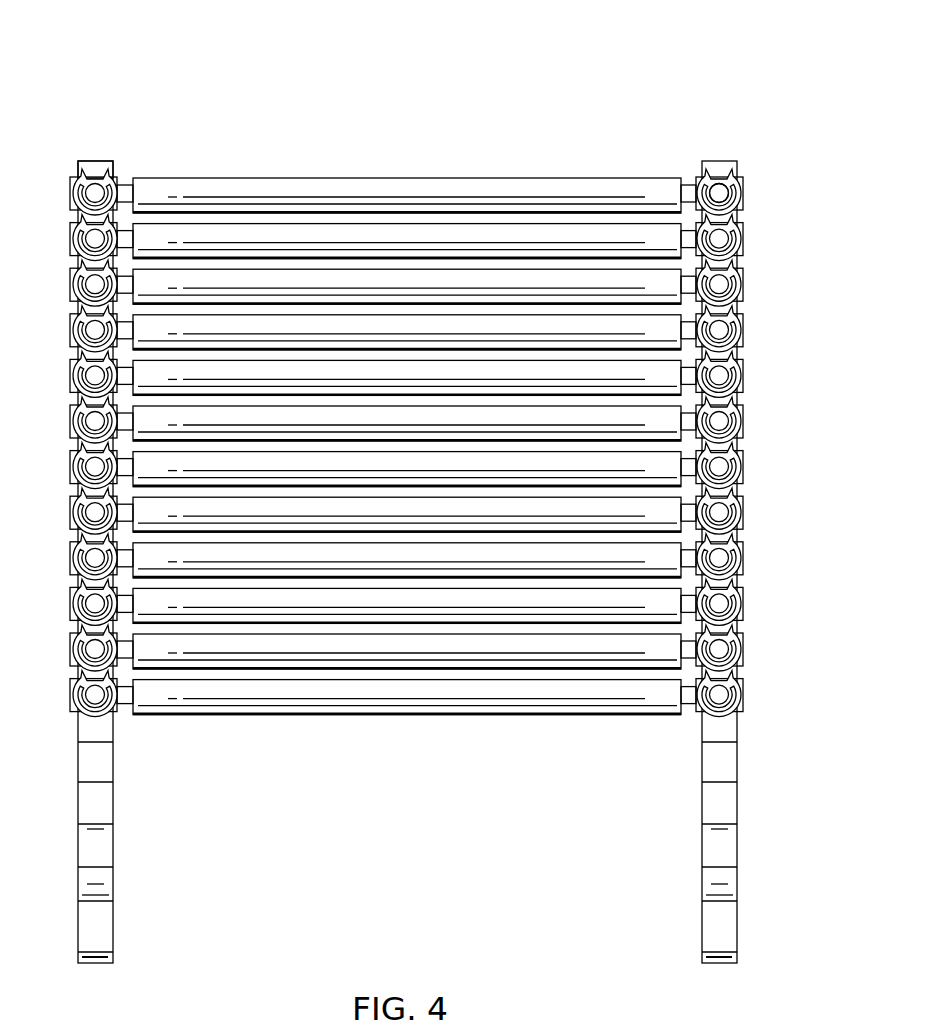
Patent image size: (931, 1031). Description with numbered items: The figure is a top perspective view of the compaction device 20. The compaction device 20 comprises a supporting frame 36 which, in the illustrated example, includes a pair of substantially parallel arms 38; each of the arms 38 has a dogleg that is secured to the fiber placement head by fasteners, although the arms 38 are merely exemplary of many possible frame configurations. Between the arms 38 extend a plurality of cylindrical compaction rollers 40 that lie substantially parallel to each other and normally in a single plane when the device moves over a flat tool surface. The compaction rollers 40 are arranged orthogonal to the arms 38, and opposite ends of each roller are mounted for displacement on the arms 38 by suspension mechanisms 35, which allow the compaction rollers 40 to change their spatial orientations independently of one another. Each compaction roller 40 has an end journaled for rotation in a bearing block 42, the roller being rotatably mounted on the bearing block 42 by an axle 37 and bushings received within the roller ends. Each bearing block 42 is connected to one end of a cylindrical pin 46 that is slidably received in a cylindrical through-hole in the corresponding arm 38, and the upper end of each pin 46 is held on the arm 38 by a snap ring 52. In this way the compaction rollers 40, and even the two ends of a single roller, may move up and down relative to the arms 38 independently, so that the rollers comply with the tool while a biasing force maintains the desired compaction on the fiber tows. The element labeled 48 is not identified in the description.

The compaction device 20 is at (340, 56).
The suspension mechanisms 35 is at (759, 356).
The supporting frame 36 is at (783, 892).
The axles 37 is at (129, 177).
The arms 38 is at (98, 965).
The compaction rollers 40 is at (409, 185).
The bearing block 42 is at (98, 175).
The cylindrical pin 46 is at (719, 192).
The support column 48 is at (78, 845).
The snap ring 52 is at (745, 196).